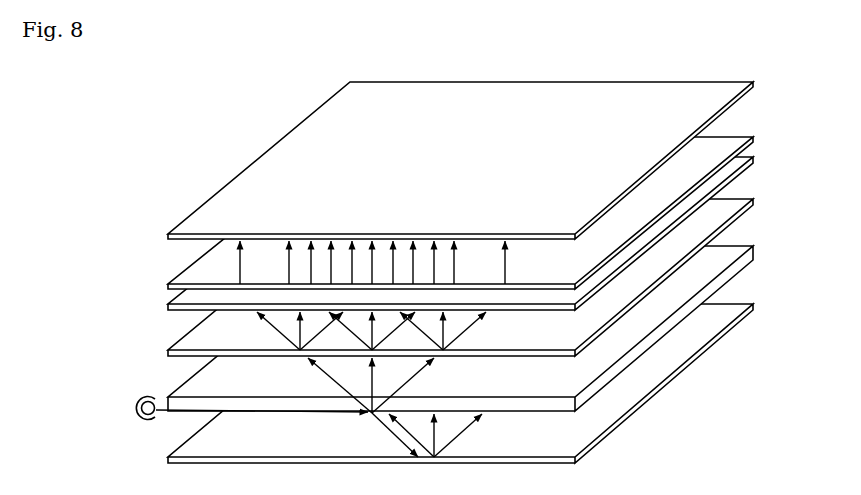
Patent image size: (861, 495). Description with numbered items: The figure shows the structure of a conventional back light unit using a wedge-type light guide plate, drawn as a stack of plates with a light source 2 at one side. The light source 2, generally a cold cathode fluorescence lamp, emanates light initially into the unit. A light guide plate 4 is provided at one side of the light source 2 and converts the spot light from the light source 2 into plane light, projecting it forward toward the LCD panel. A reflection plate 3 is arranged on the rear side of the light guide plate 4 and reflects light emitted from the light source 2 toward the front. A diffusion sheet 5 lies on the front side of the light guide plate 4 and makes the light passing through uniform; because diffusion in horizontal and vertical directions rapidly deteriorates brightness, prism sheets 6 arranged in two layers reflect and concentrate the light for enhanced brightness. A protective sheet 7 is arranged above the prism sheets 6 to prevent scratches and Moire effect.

The light source 2 is at (150, 400).
The reflection plate 3 is at (733, 306).
The light guide plate 4 is at (733, 248).
The diffusion sheet 5 is at (732, 206).
The prism sheets 6 is at (732, 142).
The protective sheet 7 is at (732, 85).